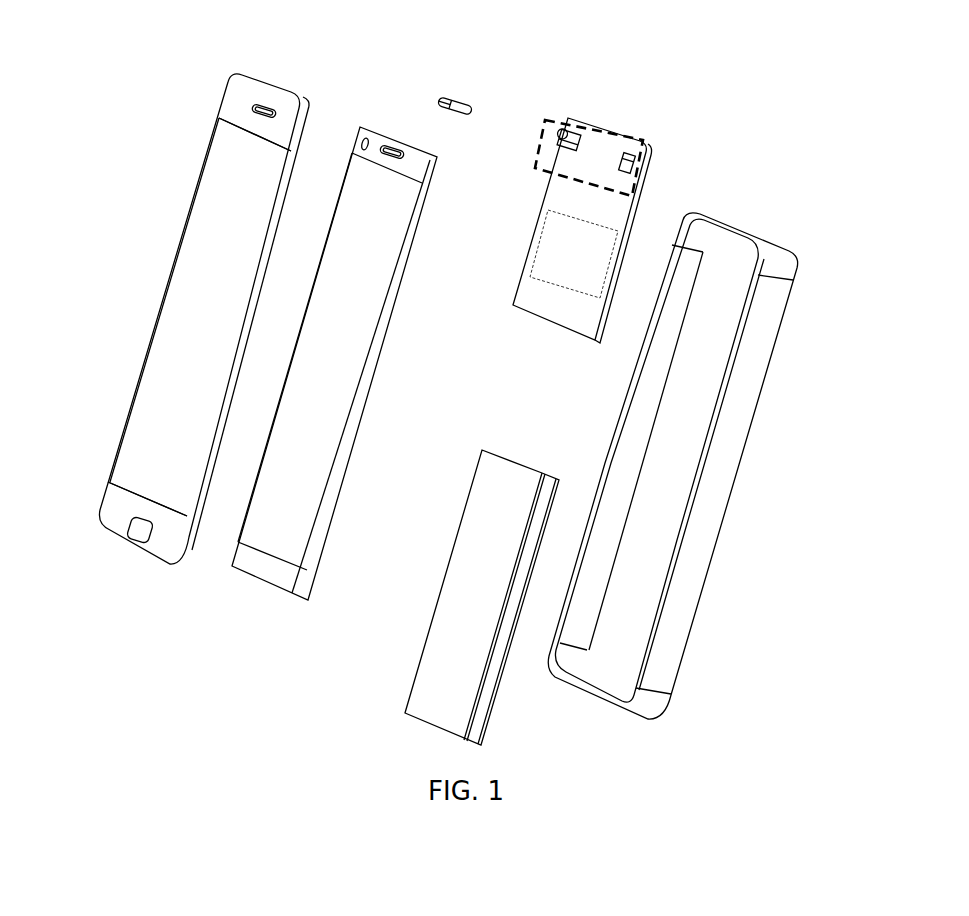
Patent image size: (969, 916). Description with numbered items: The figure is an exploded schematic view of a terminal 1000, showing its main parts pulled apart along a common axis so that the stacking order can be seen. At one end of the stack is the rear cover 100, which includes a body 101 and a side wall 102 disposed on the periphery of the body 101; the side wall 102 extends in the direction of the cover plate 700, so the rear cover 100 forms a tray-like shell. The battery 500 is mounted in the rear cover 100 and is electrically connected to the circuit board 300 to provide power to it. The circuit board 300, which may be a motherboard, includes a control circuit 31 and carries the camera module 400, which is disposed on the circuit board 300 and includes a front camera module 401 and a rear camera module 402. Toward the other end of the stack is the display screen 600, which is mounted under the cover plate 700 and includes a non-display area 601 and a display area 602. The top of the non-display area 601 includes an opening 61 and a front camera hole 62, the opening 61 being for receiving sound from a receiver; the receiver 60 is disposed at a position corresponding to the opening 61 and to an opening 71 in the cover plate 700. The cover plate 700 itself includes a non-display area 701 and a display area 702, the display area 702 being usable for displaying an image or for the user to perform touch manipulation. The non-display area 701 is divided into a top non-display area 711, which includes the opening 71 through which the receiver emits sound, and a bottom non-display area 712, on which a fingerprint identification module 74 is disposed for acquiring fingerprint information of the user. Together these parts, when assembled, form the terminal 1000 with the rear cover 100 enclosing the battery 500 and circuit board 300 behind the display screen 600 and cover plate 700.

The terminal 1000 is at (776, 76).
The cover plate 700 is at (285, 88).
The top non-display area 711 is at (232, 96).
The bottom non-display area 712 is at (162, 552).
The non-display area 701 is at (292, 122).
The display area 702 is at (187, 212).
The opening 71 is at (265, 100).
The fingerprint identification module 74 is at (128, 535).
The display screen 600 is at (384, 135).
The non-display area 601 is at (417, 165).
The display area 602 is at (388, 270).
The opening 61 is at (402, 150).
The front camera hole 62 is at (358, 123).
The receiver 60 is at (462, 96).
The circuit board 300 is at (618, 126).
The control circuit 31 is at (535, 267).
The camera module 400 is at (648, 148).
The front camera module 401 is at (571, 122).
The rear camera module 402 is at (640, 162).
The battery 500 is at (535, 467).
The rear cover 100 is at (752, 232).
The body 101 is at (698, 418).
The side wall 102 is at (758, 315).